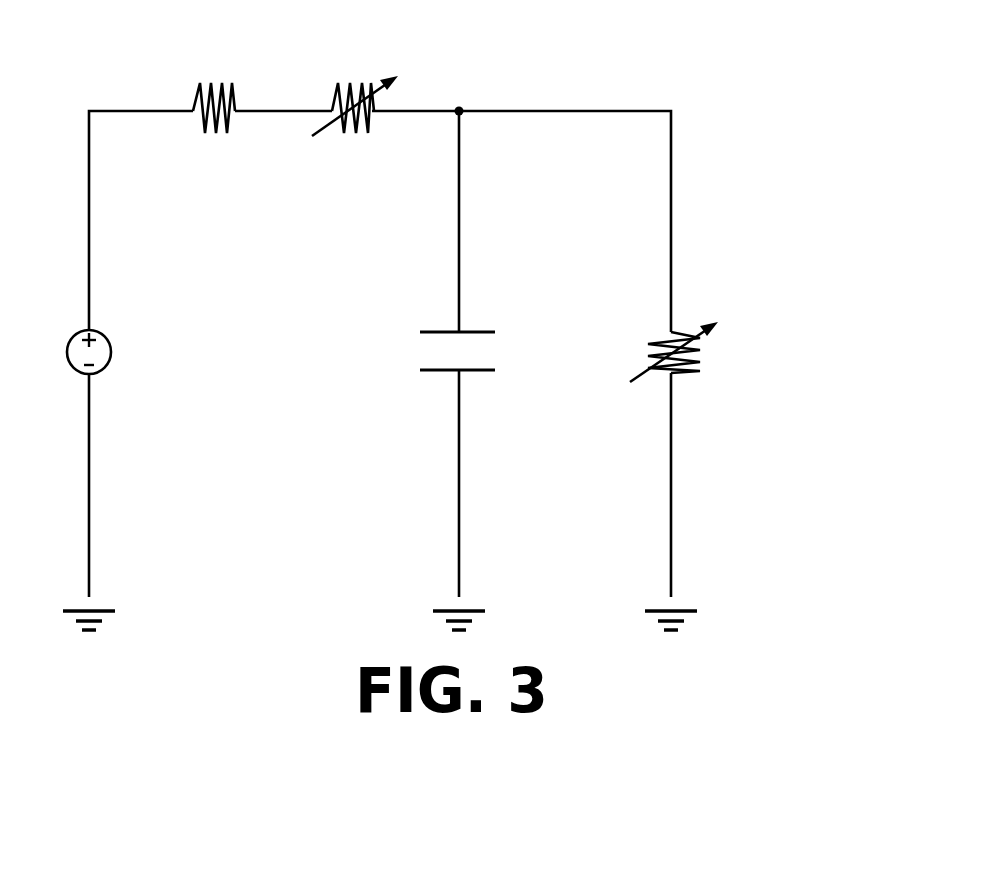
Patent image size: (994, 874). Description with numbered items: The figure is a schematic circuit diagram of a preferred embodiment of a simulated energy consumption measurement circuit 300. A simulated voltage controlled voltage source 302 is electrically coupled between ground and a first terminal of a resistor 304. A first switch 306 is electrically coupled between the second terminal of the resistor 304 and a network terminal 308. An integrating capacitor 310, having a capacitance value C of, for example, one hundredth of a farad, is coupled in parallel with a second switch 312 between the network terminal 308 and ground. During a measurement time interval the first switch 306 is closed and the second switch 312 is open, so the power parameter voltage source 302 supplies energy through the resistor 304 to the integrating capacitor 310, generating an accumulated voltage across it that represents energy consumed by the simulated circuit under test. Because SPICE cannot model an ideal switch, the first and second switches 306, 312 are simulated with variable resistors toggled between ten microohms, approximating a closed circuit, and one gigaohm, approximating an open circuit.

The simulated energy consumption measurement circuit 300 is at (133, 37).
The simulated voltage controlled voltage source 302 is at (95, 328).
The resistor 304 is at (194, 100).
The first switch 306 is at (333, 99).
The network terminal 308 is at (459, 108).
The integrating capacitor 310 is at (432, 372).
The second switch 312 is at (681, 373).